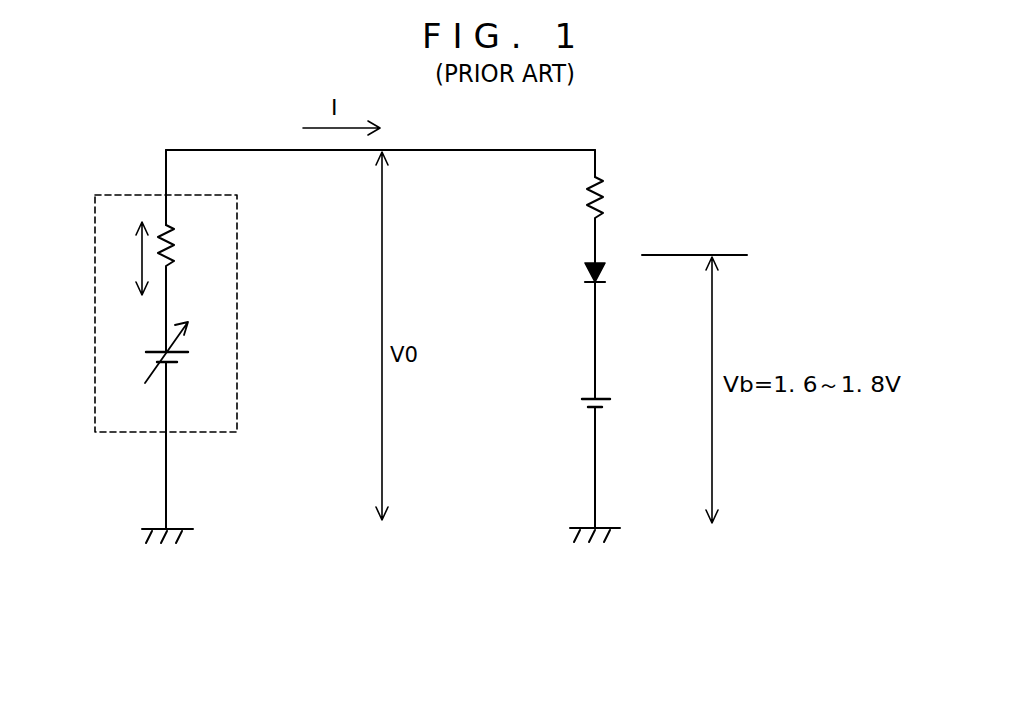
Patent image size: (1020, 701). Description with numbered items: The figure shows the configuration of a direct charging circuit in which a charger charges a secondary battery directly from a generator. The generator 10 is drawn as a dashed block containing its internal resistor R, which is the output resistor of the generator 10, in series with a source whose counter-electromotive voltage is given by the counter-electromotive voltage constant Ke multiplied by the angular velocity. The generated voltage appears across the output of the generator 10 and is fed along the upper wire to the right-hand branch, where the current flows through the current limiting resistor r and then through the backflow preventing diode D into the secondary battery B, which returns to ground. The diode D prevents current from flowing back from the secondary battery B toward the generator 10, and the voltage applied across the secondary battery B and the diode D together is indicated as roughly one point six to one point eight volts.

The generator 10 is at (237, 330).
The internal resistor R is at (177, 247).
The counter-electromotive voltage constant Ke is at (184, 362).
The current limiting resistor r is at (605, 198).
The backflow preventing diode D is at (579, 273).
The secondary battery B is at (606, 405).